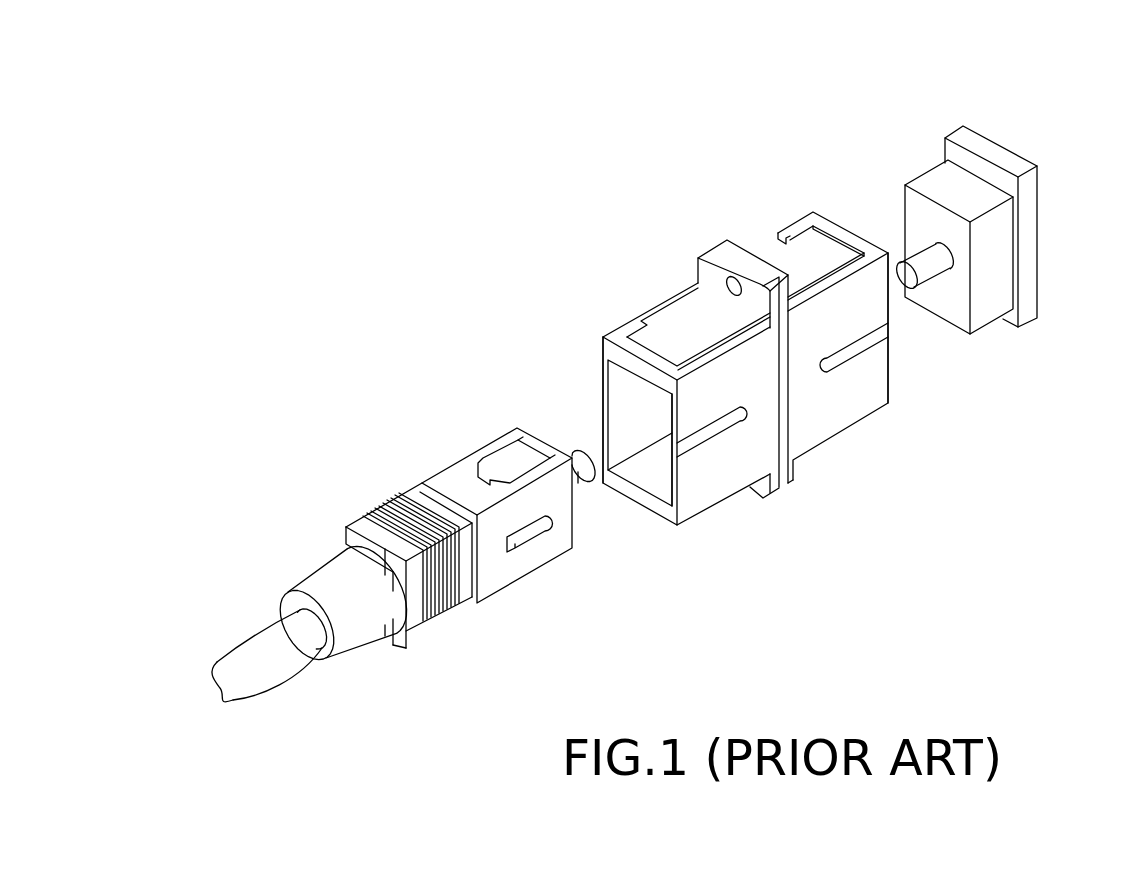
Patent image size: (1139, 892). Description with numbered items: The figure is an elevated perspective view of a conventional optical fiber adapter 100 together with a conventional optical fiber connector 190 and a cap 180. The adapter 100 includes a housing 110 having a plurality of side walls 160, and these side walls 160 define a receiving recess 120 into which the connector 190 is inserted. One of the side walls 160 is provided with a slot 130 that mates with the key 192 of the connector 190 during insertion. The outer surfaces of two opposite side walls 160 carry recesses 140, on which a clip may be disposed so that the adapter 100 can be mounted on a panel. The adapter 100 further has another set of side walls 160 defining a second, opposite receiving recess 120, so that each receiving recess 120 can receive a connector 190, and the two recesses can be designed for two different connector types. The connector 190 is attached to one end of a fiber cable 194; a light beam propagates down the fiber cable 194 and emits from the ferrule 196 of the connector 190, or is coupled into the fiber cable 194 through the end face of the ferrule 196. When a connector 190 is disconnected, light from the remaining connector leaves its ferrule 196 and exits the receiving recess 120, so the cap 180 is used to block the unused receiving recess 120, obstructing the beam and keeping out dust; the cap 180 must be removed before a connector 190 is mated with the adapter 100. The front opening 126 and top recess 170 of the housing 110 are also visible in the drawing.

The fiber adapter 100 is at (656, 158).
The housing 110 is at (592, 309).
The receiving recess 120 is at (660, 455).
The front opening 126 is at (606, 351).
The slot 130 is at (713, 428).
The recess 140 is at (695, 312).
The side wall 160 is at (788, 253).
The top recess 170 is at (650, 292).
The cap 180 is at (1026, 140).
The connector 190 is at (371, 458).
The key 192 is at (530, 543).
The fiber cable 194 is at (272, 642).
The ferrule 196 is at (592, 460).